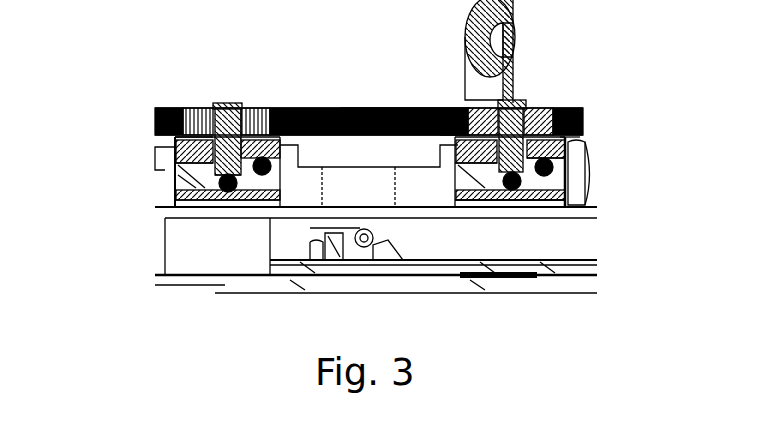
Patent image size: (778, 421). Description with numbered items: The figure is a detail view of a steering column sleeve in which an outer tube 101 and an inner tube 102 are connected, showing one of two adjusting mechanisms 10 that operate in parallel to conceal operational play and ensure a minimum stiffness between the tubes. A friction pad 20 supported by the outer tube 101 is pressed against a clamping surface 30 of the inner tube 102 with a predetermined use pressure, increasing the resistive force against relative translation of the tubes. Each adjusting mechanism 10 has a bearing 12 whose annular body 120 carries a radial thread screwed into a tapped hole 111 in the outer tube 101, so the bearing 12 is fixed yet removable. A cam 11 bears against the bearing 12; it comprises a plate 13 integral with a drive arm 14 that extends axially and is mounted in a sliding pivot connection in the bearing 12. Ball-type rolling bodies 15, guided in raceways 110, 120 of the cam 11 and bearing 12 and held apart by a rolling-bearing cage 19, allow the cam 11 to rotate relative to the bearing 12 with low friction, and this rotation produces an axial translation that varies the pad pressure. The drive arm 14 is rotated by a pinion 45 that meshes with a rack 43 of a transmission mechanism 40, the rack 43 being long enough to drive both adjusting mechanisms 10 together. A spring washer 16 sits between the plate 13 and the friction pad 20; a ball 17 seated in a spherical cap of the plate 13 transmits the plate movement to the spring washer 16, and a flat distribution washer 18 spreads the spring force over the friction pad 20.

The adjusting mechanism 10 is at (248, 96).
The cam 11 is at (225, 100).
The bearing 12 is at (575, 137).
The plate 13 is at (586, 178).
The drive arm 14 is at (250, 113).
The rolling bodies 15 is at (588, 162).
The spring washer 16 is at (250, 187).
The ball 17 is at (540, 205).
The flat distribution washer 18 is at (270, 180).
The rolling-bearing cage 19 is at (174, 139).
The friction pad 20 is at (510, 210).
The clamping surface 30 is at (470, 205).
The transmission mechanism 40 is at (333, 73).
The rack 43 is at (392, 108).
The pinion 45 is at (174, 128).
The outer tube 101 is at (344, 164).
The inner tube 102 is at (210, 218).
The raceway 110 is at (176, 180).
The tapped hole 111 is at (452, 112).
The annular body 120 is at (174, 174).